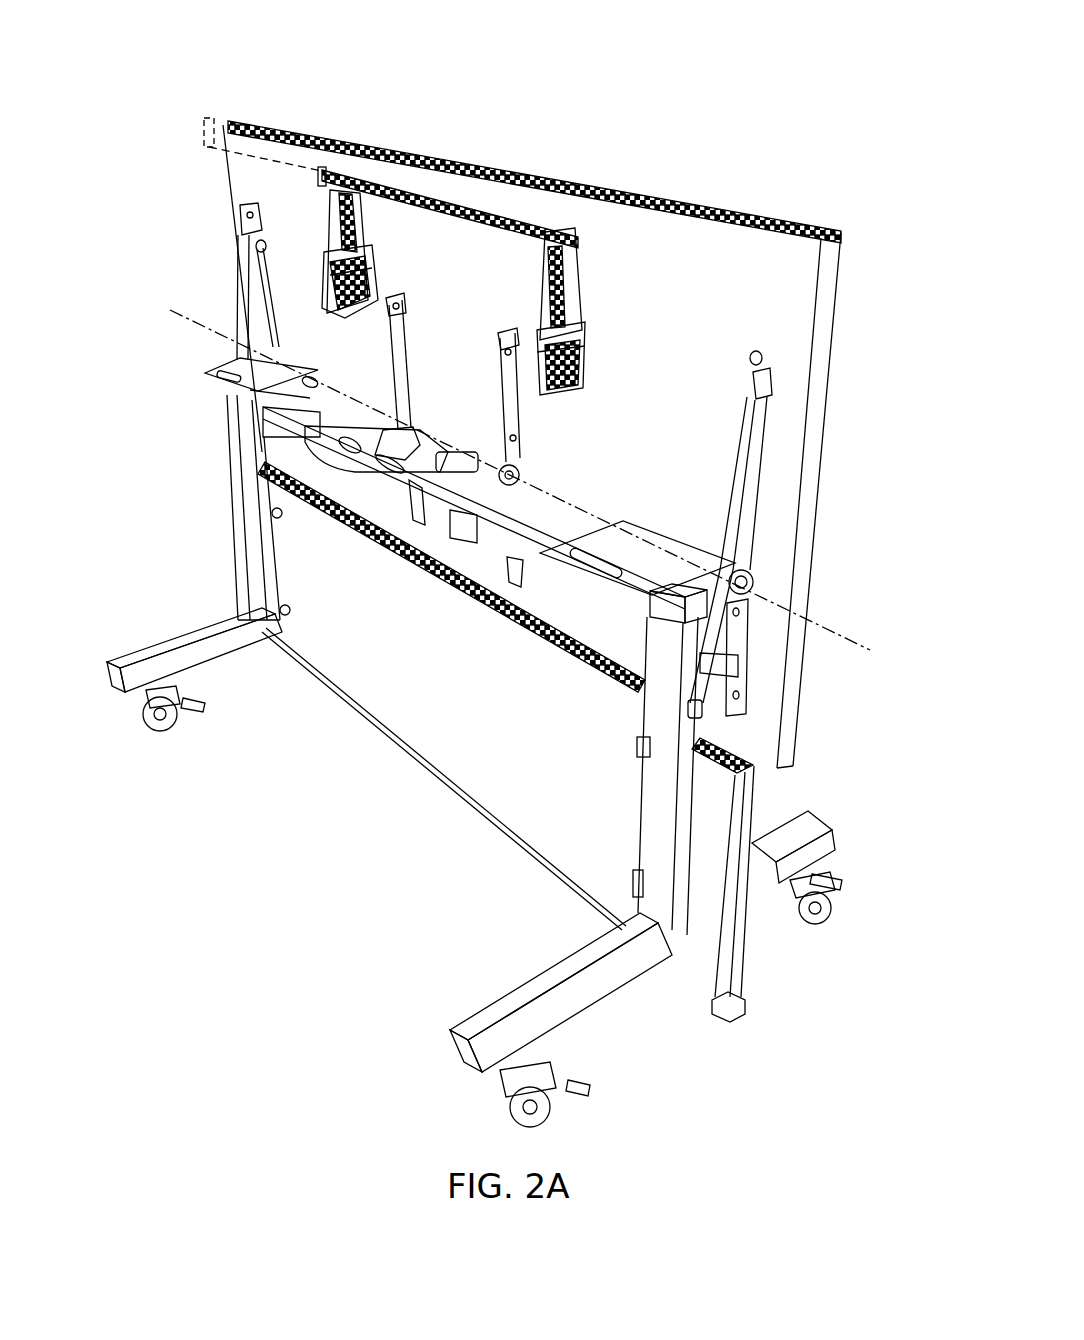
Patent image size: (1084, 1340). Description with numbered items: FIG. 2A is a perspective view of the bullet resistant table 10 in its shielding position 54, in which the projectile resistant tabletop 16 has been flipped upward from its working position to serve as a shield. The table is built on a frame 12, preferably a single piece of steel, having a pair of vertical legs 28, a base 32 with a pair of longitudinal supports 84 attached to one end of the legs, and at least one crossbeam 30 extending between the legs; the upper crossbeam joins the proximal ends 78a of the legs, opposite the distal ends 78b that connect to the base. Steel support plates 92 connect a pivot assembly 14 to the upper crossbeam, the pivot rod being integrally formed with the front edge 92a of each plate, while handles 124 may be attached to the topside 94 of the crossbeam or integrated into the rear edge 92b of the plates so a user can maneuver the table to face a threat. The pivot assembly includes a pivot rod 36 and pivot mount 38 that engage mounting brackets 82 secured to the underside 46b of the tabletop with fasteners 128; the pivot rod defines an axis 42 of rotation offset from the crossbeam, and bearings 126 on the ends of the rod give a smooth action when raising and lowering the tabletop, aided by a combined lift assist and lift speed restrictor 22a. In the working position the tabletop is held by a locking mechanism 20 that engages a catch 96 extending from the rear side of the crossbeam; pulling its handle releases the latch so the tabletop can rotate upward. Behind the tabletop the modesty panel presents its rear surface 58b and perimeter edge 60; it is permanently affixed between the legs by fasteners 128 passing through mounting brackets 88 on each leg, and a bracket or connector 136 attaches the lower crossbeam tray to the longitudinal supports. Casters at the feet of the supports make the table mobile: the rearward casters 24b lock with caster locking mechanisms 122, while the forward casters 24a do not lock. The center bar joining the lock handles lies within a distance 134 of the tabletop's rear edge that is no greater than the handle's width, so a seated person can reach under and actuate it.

The table 10 is at (117, 34).
The frame 12 is at (205, 476).
The pivot assembly 14 is at (460, 418).
The tabletop 16 is at (830, 322).
The locking mechanism 20 is at (582, 305).
The combined lift assist and lift speed restrictor 22a is at (733, 497).
The forward casters 24a is at (826, 916).
The rearward casters 24b is at (148, 718).
The vertical legs 28 is at (245, 517).
The crossbeam 30 is at (505, 598).
The base 32 is at (727, 1070).
The pivot rod 36 is at (278, 358).
The pivot mount 38 is at (417, 443).
The axis of rotation 42 is at (200, 324).
The underside of tabletop 46b is at (720, 293).
The shielding position 54 is at (885, 160).
The rear surface of modesty panel 58b is at (520, 773).
The perimeter edge of modesty panel 60 is at (740, 738).
The proximal ends of the vertical legs 78a is at (665, 618).
The distal ends of the vertical legs 78b is at (728, 922).
The mounting brackets 82 is at (505, 560).
The longitudinal supports 84 is at (165, 648).
The mounting brackets 88 is at (277, 513).
The support plates 92 is at (240, 363).
The front edge of support plate 92a is at (640, 540).
The rear edge of support plate 92b is at (578, 580).
The topside of upper crossbeam 94 is at (343, 418).
The catch 96 is at (283, 418).
The caster locking mechanisms 122 is at (192, 712).
The handles 124 is at (207, 377).
The bearings 126 is at (477, 460).
The fasteners 128 is at (394, 420).
The distance 134 is at (205, 132).
The connector 136 is at (653, 913).